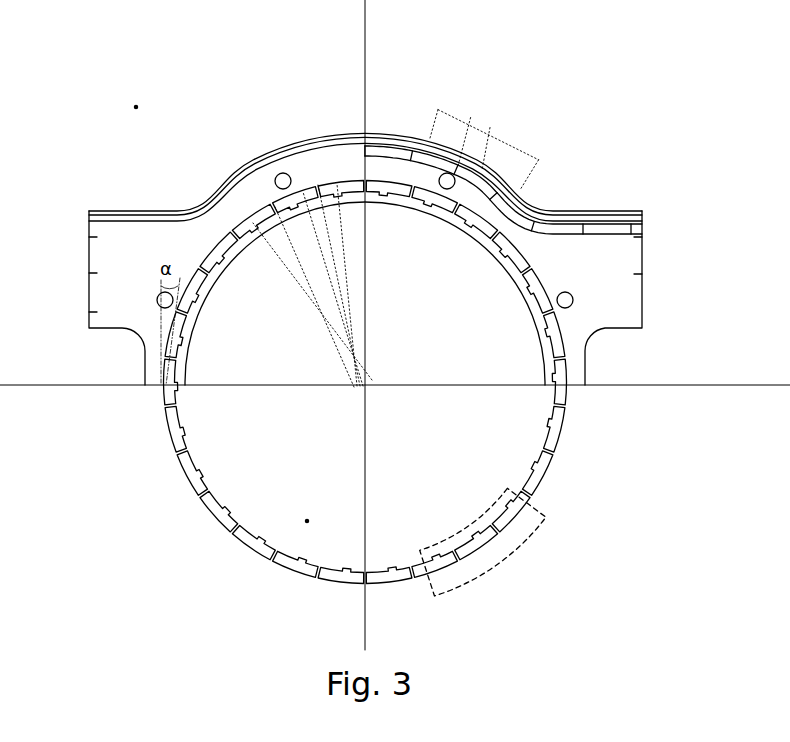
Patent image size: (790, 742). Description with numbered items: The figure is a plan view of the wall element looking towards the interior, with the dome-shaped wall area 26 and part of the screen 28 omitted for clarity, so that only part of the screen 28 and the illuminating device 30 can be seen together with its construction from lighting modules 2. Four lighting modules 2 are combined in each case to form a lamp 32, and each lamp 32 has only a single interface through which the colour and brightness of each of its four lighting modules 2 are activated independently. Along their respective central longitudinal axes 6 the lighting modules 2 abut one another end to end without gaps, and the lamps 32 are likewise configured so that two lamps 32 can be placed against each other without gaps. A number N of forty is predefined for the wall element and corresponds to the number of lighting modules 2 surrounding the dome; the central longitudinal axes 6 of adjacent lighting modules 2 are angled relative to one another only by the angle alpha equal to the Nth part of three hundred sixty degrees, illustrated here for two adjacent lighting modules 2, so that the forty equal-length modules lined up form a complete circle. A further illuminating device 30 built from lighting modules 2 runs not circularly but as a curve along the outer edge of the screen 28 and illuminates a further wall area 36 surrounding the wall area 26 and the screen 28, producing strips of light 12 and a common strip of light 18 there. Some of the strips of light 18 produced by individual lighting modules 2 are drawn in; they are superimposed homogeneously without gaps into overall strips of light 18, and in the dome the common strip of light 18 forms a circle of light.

The lighting module 2 is at (566, 334).
The central longitudinal axis 6 is at (157, 292).
The strip of light 12 is at (322, 237).
The common strip of light 18 is at (480, 147).
The wall area 26 is at (306, 522).
The screen 28 is at (642, 292).
The illuminating device 30 is at (598, 222).
The lamp 32 is at (516, 548).
The further wall area 36 is at (137, 108).